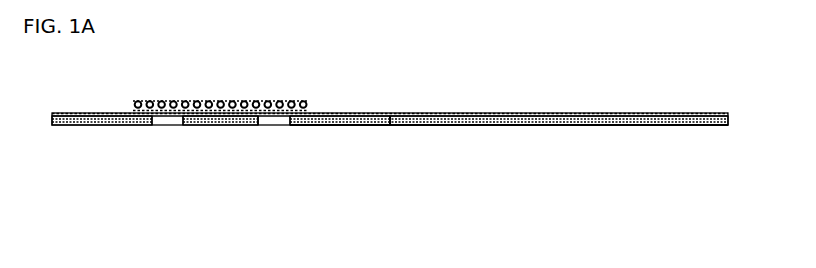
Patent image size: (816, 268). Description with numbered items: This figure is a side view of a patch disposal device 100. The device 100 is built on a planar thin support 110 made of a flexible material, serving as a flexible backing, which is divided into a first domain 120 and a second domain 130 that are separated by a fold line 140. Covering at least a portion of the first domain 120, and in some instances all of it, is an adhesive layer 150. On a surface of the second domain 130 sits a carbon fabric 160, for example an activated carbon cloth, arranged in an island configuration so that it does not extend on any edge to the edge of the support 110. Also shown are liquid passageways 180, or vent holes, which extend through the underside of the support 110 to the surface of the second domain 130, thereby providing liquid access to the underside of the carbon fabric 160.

The device 100 is at (454, 158).
The support 110 is at (558, 124).
The first domain 120 is at (476, 131).
The second domain 130 is at (305, 129).
The fold line 140 is at (392, 129).
The adhesive layer 150 is at (478, 112).
The carbon fabric 160 is at (289, 106).
The liquid passageways 180 is at (248, 132).